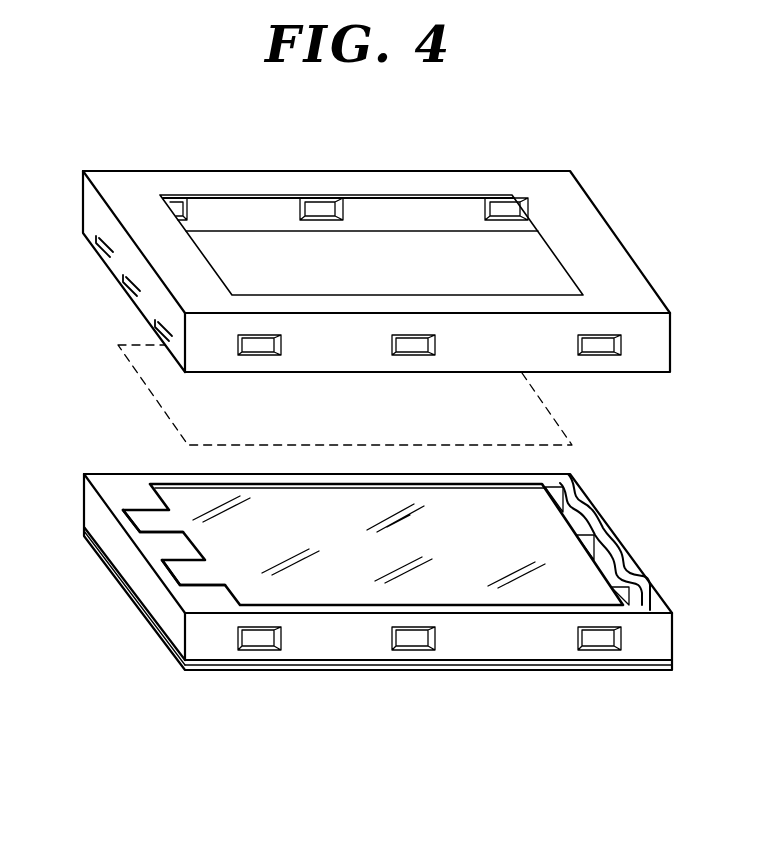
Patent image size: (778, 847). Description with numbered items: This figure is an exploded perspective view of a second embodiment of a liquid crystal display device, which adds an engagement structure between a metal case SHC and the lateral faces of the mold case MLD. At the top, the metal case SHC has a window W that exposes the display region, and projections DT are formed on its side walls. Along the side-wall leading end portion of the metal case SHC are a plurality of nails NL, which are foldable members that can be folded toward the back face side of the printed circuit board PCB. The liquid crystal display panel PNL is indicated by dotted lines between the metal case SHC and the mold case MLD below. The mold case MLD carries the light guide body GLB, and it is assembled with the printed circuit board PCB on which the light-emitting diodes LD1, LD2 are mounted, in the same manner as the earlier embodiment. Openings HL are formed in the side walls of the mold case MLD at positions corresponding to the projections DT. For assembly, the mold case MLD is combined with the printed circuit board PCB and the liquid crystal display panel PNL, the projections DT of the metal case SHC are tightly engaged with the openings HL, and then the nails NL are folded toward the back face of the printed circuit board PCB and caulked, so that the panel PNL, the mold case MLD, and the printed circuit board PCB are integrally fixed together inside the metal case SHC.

The window W is at (240, 193).
The metal case SHC is at (418, 171).
The nail NL is at (130, 293).
The liquid crystal display panel PNL is at (158, 400).
The light guide body GLB is at (310, 497).
The projection DT is at (418, 345).
The mold case MLD is at (192, 473).
The light-emitting diode LD1 is at (140, 522).
The light-emitting diode LD2 is at (175, 575).
The opening HL is at (422, 650).
The printed circuit board PCB is at (323, 667).